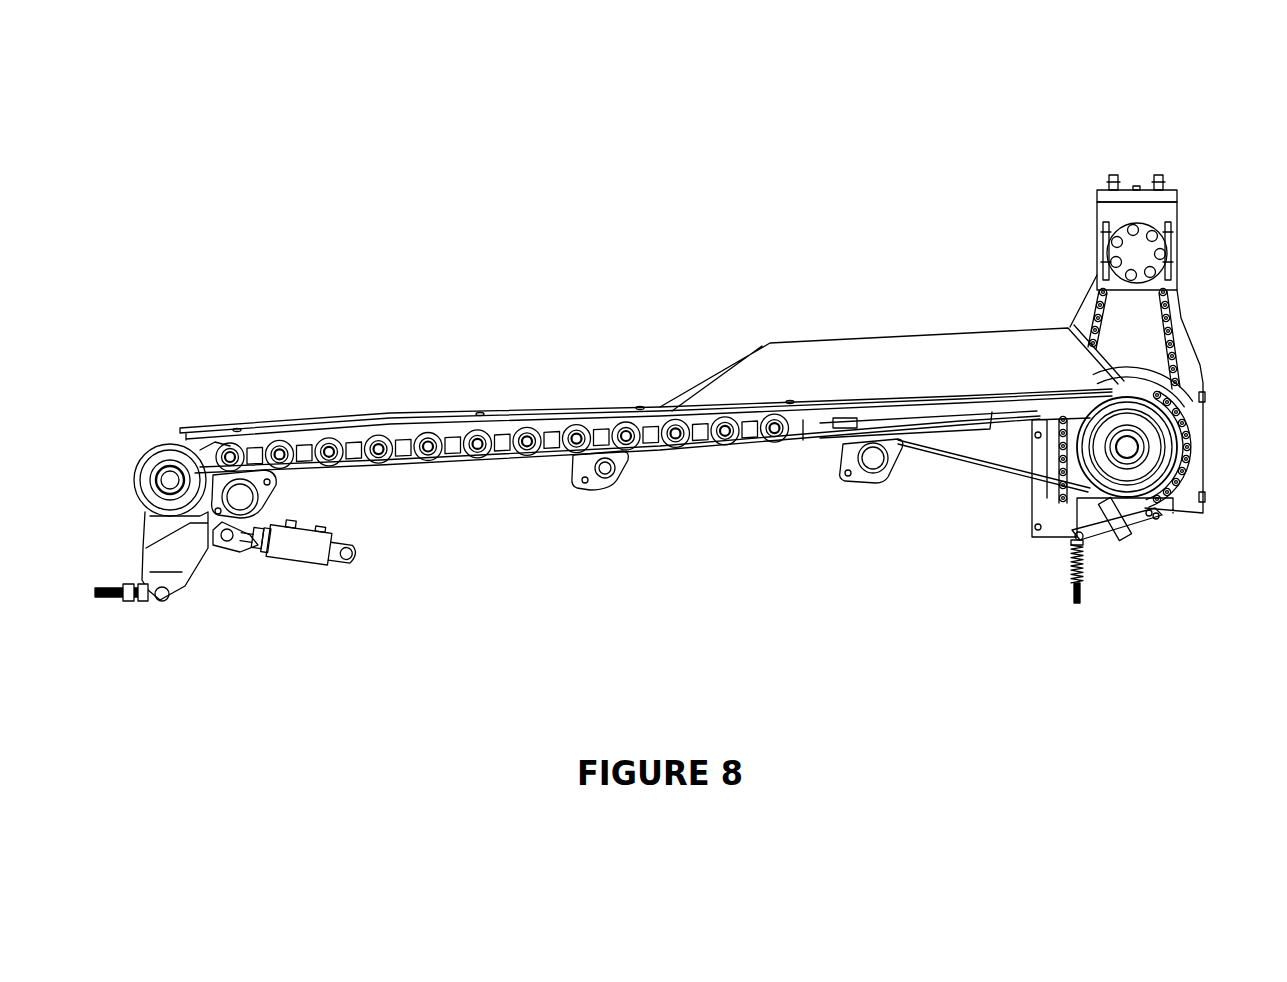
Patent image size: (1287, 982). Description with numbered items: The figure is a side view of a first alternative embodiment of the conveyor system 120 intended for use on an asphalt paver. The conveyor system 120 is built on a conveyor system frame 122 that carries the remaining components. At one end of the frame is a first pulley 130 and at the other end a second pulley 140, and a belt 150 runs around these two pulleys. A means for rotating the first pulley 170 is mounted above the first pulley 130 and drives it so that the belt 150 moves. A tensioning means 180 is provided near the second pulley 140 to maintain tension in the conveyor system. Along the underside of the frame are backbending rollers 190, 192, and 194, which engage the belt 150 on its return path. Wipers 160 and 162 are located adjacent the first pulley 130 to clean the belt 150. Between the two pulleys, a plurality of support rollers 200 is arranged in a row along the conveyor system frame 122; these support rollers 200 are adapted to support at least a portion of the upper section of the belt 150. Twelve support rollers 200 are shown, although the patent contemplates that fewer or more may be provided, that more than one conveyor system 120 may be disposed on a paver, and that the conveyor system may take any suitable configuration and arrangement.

The conveyor system 120 is at (637, 350).
The conveyor system frame 122 is at (990, 425).
The first pulley 130 is at (1150, 462).
The second pulley 140 is at (168, 470).
The belt 150 is at (140, 465).
The wiper 160 is at (1203, 516).
The wiper 162 is at (1124, 550).
The means for rotating the first pulley 170 is at (1186, 189).
The tensioning means 180 is at (298, 581).
The backbending roller 190 is at (270, 496).
The backbending roller 192 is at (605, 492).
The backbending roller 194 is at (862, 485).
The support rollers 200 is at (480, 405).